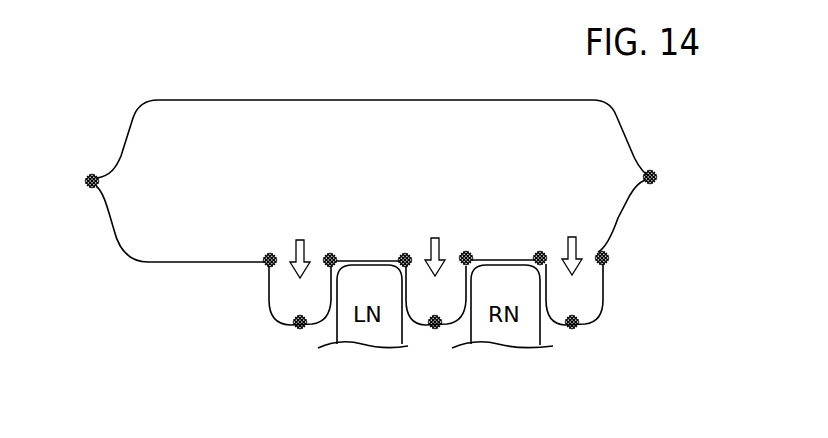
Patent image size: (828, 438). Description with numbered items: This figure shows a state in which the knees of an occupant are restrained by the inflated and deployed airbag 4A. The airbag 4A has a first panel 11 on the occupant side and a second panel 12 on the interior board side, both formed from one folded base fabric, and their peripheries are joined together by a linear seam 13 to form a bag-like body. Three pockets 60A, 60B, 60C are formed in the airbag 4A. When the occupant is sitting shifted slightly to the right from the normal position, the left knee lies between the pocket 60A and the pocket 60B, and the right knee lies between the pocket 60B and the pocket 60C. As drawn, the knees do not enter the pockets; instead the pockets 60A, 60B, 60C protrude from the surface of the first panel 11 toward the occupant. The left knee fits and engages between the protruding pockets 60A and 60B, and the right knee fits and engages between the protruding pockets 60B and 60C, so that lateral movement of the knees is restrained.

The airbag 4A is at (98, 93).
The second panel 12 is at (220, 99).
The first panel 11 is at (190, 266).
The linear seam 13 is at (90, 188).
The pocket 60A is at (283, 332).
The pocket 60B is at (418, 332).
The pocket 60C is at (595, 330).